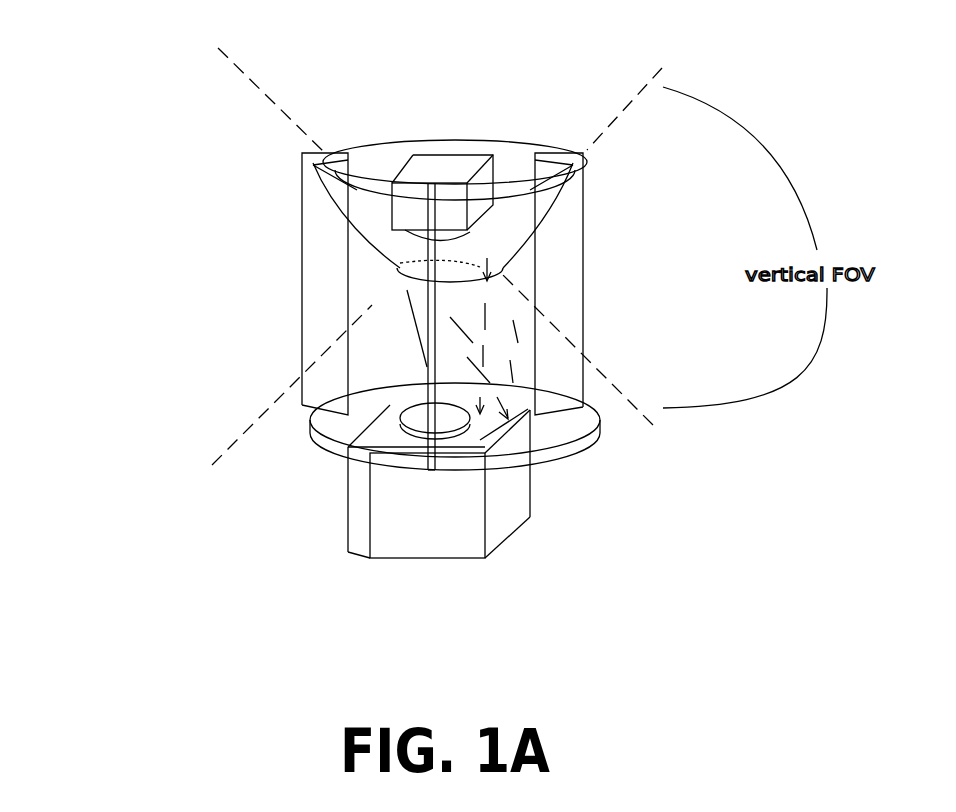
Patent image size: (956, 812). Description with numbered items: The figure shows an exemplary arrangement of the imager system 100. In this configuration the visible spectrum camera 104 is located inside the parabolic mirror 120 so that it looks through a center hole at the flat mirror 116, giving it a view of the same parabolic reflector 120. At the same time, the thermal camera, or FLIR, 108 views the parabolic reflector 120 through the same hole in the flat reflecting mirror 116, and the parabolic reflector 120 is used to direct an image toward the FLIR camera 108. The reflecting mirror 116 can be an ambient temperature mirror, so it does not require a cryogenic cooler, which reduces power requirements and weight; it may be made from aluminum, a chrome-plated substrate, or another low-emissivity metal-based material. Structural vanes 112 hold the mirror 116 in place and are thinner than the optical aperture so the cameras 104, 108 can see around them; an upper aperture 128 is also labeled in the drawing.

The system 100 is at (210, 608).
The visible spectrum camera 104 is at (432, 172).
The thermal camera (FLIR) 108 is at (426, 511).
The structural vanes 112 is at (565, 265).
The flat mirror 116 is at (335, 428).
The parabolic mirror 120 is at (353, 207).
The upper aperture 128 is at (397, 277).